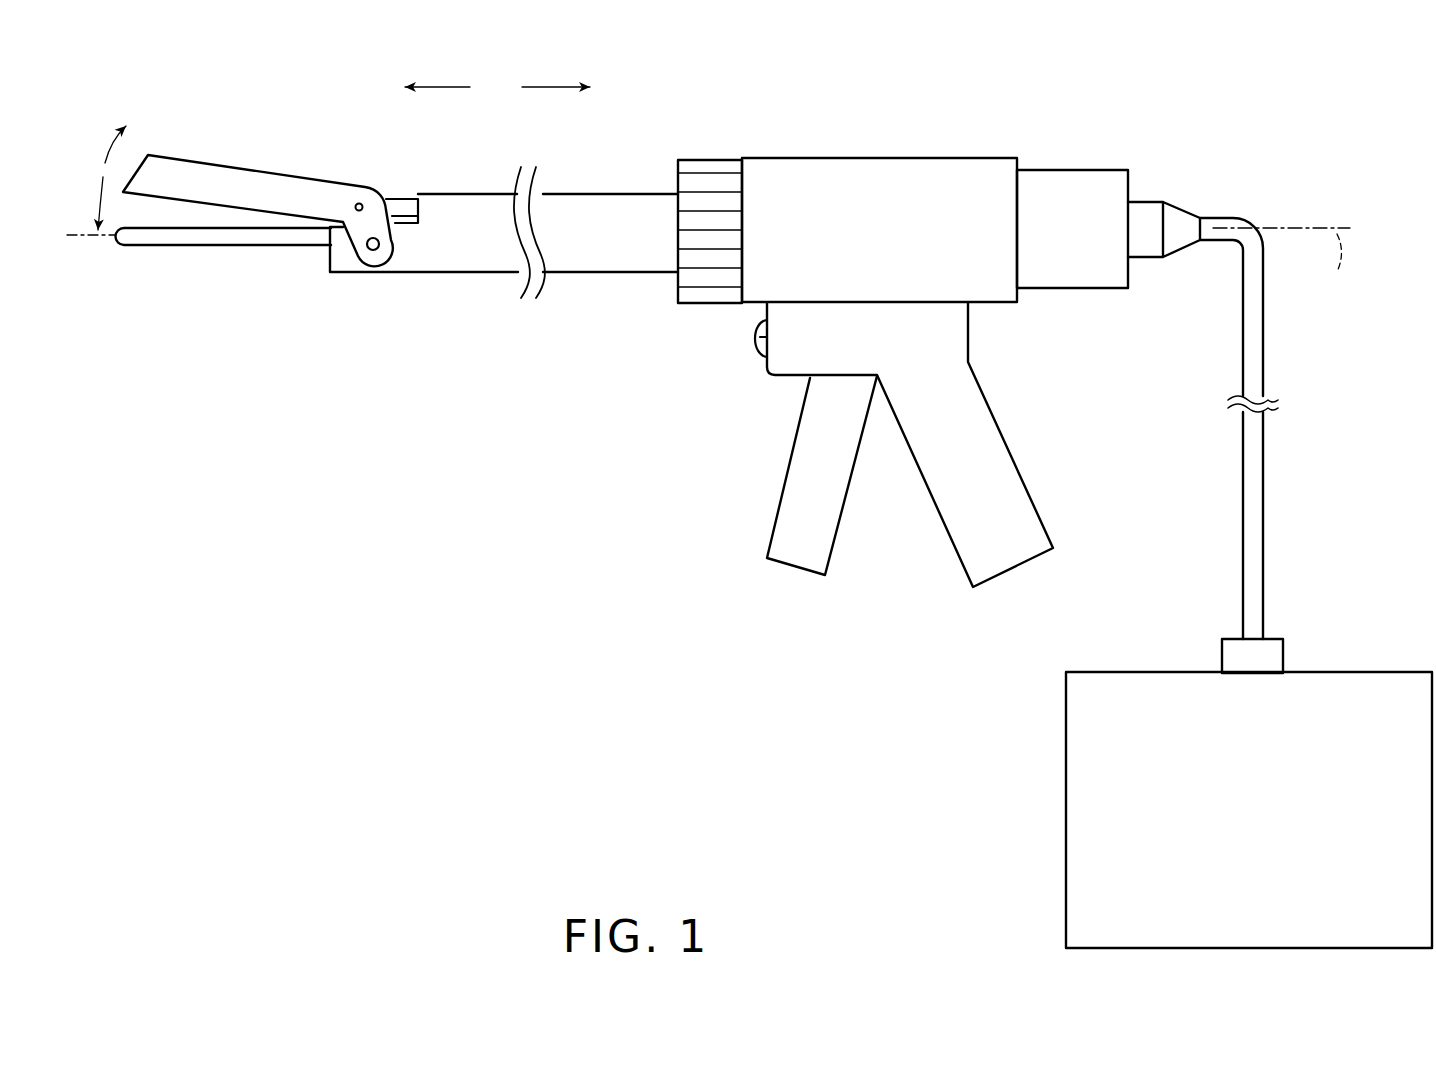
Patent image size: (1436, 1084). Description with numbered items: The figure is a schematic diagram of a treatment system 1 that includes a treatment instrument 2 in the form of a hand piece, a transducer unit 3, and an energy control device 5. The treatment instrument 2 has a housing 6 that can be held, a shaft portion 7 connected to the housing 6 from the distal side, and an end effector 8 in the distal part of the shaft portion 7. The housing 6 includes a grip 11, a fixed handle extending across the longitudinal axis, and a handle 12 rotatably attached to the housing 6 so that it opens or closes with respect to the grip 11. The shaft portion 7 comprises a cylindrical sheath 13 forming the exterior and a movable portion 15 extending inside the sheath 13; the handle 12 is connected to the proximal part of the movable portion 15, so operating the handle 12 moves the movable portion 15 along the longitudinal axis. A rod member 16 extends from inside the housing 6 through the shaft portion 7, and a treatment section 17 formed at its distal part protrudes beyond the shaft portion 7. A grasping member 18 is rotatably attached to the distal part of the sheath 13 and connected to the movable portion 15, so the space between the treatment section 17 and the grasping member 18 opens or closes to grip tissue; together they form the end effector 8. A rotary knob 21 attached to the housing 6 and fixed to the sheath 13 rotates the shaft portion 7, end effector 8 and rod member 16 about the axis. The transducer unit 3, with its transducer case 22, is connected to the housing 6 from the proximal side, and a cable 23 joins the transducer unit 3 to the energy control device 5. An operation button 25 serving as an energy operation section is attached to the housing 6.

The treatment system 1 is at (494, 529).
The treatment instrument 2 is at (830, 116).
The transducer unit 3 is at (1096, 156).
The energy control device 5 is at (1374, 654).
The housing 6 is at (887, 188).
The shaft portion 7 is at (570, 211).
The end effector 8 is at (275, 300).
The grip 11 is at (988, 457).
The handle 12 is at (806, 481).
The sheath 13 is at (590, 258).
The movable portion 15 is at (396, 208).
The rod member 16 is at (307, 240).
The treatment section 17 is at (254, 238).
The grasping member 18 is at (158, 182).
The rotary knob 21 is at (708, 172).
The transducer case 22 is at (1071, 278).
The cable 23 is at (1252, 483).
The operation button 25 is at (752, 342).